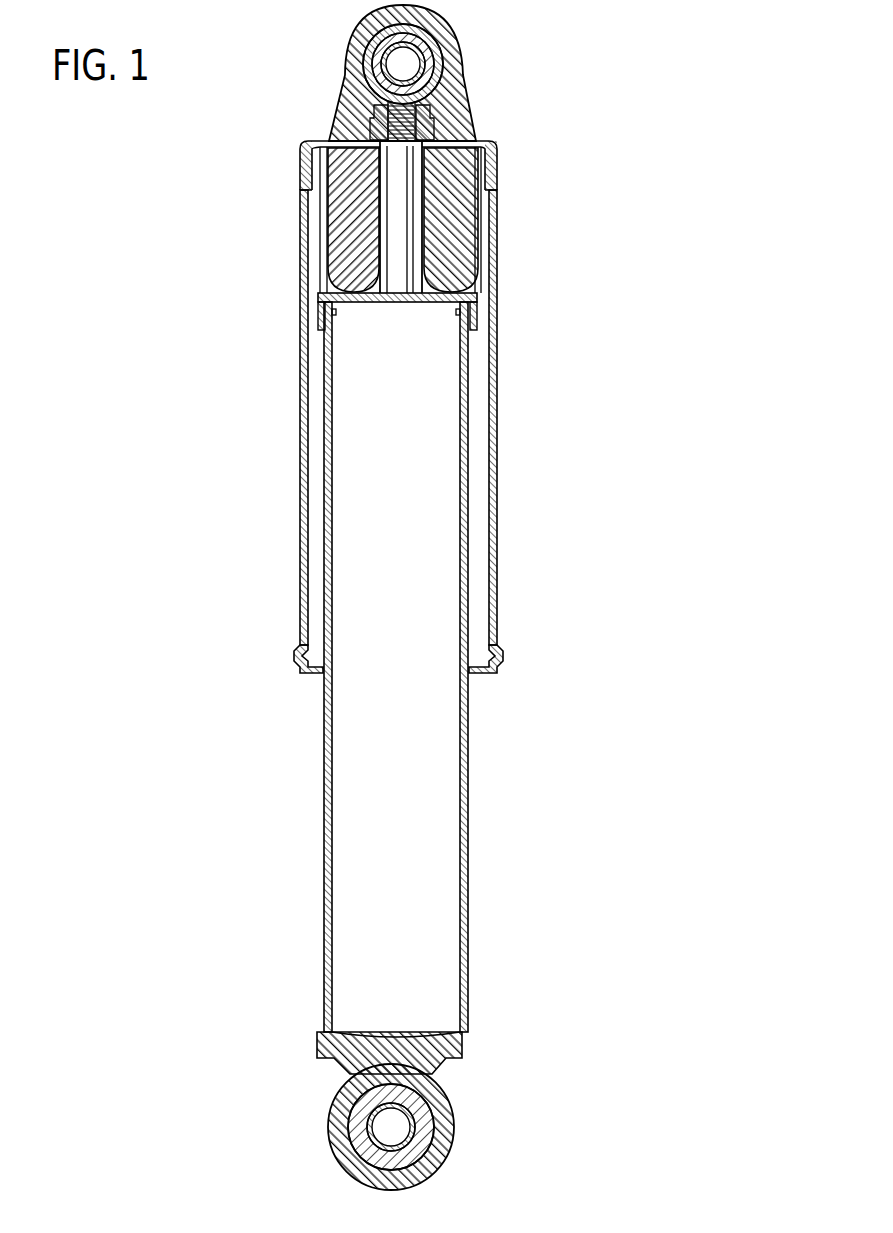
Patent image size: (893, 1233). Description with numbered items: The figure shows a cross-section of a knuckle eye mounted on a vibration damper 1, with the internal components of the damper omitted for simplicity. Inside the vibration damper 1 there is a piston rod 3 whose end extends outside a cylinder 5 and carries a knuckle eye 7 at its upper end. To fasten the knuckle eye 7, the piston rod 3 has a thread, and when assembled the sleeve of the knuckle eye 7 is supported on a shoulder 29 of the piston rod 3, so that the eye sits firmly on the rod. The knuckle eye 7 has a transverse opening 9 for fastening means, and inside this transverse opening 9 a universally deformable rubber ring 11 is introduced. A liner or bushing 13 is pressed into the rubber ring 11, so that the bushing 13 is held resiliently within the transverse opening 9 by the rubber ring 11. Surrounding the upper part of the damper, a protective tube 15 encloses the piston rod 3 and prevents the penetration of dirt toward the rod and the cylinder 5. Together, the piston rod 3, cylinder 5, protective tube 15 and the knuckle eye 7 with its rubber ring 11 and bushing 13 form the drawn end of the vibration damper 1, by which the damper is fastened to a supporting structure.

The vibration damper 1 is at (672, 843).
The piston rod 3 is at (403, 228).
The cylinder 5 is at (471, 801).
The knuckle eye 7 is at (508, 70).
The transverse opening 9 is at (405, 62).
The rubber ring 11 is at (377, 78).
The liner or bushing 13 is at (378, 60).
The protective tube 15 is at (294, 416).
The shoulder 29 is at (430, 148).